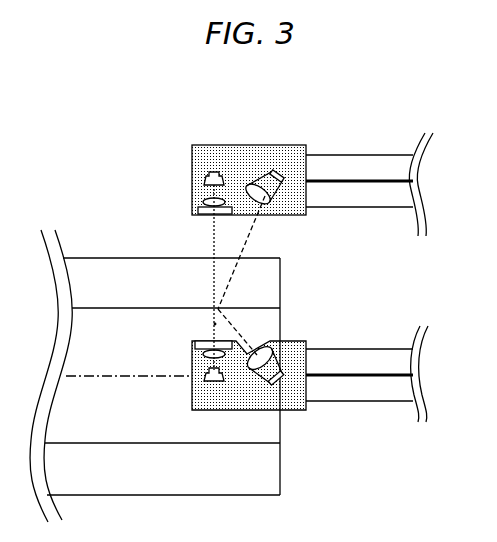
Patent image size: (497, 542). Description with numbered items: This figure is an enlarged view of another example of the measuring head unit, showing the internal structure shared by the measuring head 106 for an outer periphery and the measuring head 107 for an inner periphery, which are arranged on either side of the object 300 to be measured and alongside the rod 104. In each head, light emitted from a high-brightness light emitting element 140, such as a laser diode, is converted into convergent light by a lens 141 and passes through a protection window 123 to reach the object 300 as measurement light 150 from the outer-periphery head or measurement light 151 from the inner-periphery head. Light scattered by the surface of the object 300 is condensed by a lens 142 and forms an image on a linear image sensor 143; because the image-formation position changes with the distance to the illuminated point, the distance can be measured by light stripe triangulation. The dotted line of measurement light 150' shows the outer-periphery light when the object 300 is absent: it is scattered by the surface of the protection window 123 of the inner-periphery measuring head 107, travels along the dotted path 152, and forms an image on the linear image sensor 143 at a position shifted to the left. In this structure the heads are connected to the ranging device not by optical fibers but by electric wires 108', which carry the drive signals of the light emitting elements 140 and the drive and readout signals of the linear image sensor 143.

The rod 104 is at (350, 152).
The measuring head for an outer periphery 106 is at (228, 145).
The measuring head for an inner periphery 107 is at (297, 410).
The electric wires 108' is at (367, 340).
The protection window 123 is at (197, 210).
The high-brightness light emitting element 140 is at (206, 176).
The lens 141 is at (203, 201).
The lens 142 is at (274, 204).
The linear image sensor 143 is at (281, 160).
The measurement light 150 is at (169, 247).
The measurement light for an outer periphery 150' is at (168, 315).
The measurement light 151 is at (215, 324).
The path 152 is at (240, 270).
The object to be measured 300 is at (95, 258).